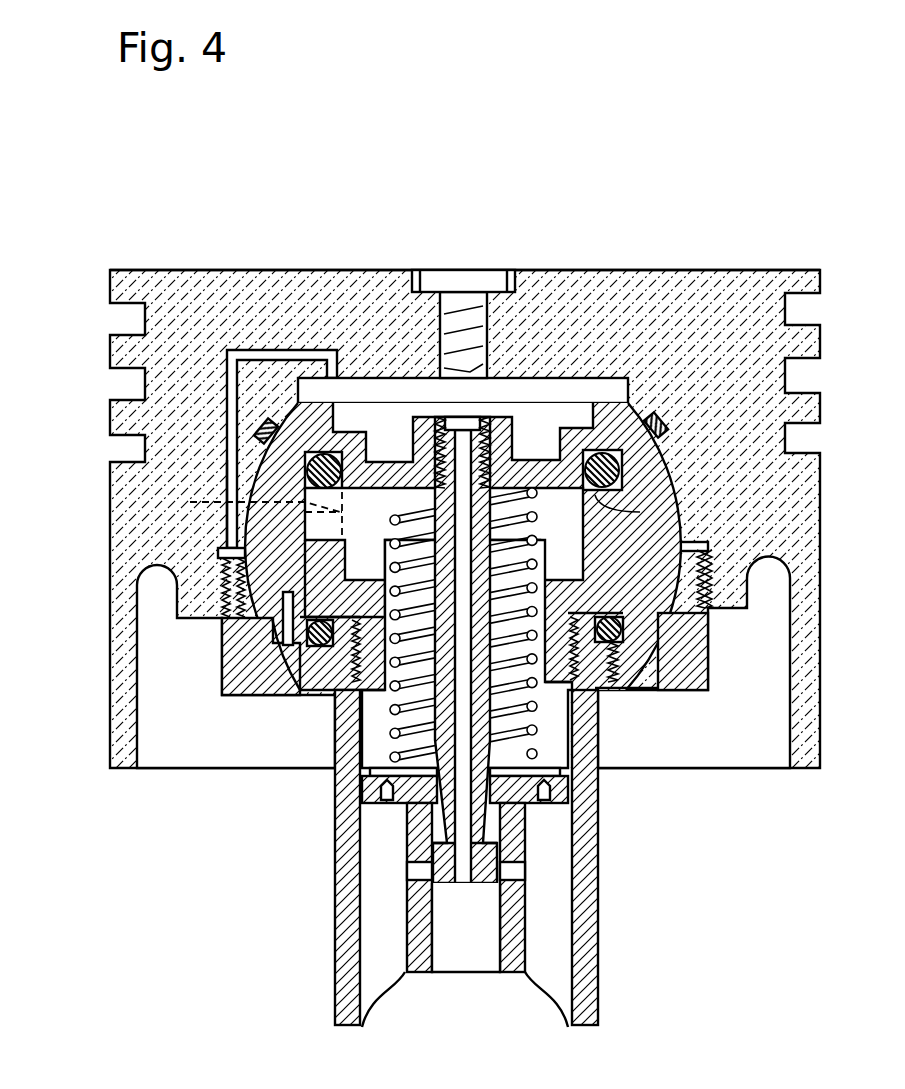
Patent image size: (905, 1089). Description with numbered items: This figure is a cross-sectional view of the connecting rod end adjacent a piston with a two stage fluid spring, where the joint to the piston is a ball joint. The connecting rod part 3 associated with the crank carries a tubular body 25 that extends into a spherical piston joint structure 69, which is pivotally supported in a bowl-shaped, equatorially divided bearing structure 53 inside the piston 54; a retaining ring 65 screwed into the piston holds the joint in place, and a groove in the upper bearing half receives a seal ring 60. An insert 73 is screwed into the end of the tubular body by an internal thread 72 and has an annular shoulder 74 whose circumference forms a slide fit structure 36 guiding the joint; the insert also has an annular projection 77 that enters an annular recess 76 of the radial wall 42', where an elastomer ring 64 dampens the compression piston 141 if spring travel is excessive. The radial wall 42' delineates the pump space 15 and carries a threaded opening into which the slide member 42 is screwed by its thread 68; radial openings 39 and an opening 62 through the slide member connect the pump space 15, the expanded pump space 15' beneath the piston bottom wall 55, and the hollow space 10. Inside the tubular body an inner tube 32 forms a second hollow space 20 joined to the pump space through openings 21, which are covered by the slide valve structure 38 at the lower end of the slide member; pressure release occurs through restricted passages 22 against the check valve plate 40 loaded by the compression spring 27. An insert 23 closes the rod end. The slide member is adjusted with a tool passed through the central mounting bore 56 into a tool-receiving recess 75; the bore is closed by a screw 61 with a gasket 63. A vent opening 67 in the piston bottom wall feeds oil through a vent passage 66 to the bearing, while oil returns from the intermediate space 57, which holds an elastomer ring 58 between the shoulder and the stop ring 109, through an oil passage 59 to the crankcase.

The connecting rod part 3 is at (608, 1007).
The hollow space 10 is at (475, 958).
The pump space 15 is at (368, 514).
The expanded pump space 15' is at (355, 378).
The second hollow space 20 is at (383, 978).
The openings 21 is at (513, 870).
The passages 22 is at (387, 803).
The insert 23 is at (492, 838).
The tubular body 25 is at (587, 943).
The compression spring 27 is at (533, 716).
The inner tube 32 is at (510, 937).
The slide fit structure 36 is at (248, 568).
The slide valve structure 38 is at (440, 877).
The openings 39 is at (520, 560).
The check valve plate 40 is at (383, 766).
The slide member 42 is at (547, 650).
The radial wall 42' is at (463, 438).
The bearing structure 53 is at (258, 467).
The piston 54 is at (180, 458).
The piston bottom wall 55 is at (390, 400).
The central mounting bore 56 is at (445, 370).
The intermediate space 57 is at (298, 645).
The elastomer ring 58 is at (660, 648).
The oil passage 59 is at (325, 580).
The seal ring 60 is at (652, 423).
The screw 61 is at (440, 278).
The opening 62 is at (483, 413).
The gasket 63 is at (497, 287).
The elastomer ring 64 is at (620, 452).
The retaining ring 65 is at (253, 684).
The vent passage 66 is at (232, 522).
The vent opening 67 is at (272, 350).
The thread 68 is at (463, 457).
The piston joint structure 69 is at (688, 462).
The internal thread 72 is at (340, 682).
The insert 73 is at (701, 600).
The annular shoulder 74 is at (625, 621).
The tool-receiving recess 75 is at (462, 420).
The annular recess 76 is at (650, 488).
The annular projection 77 is at (610, 545).
The stop ring 109 is at (607, 688).
The compression piston 141 is at (262, 269).